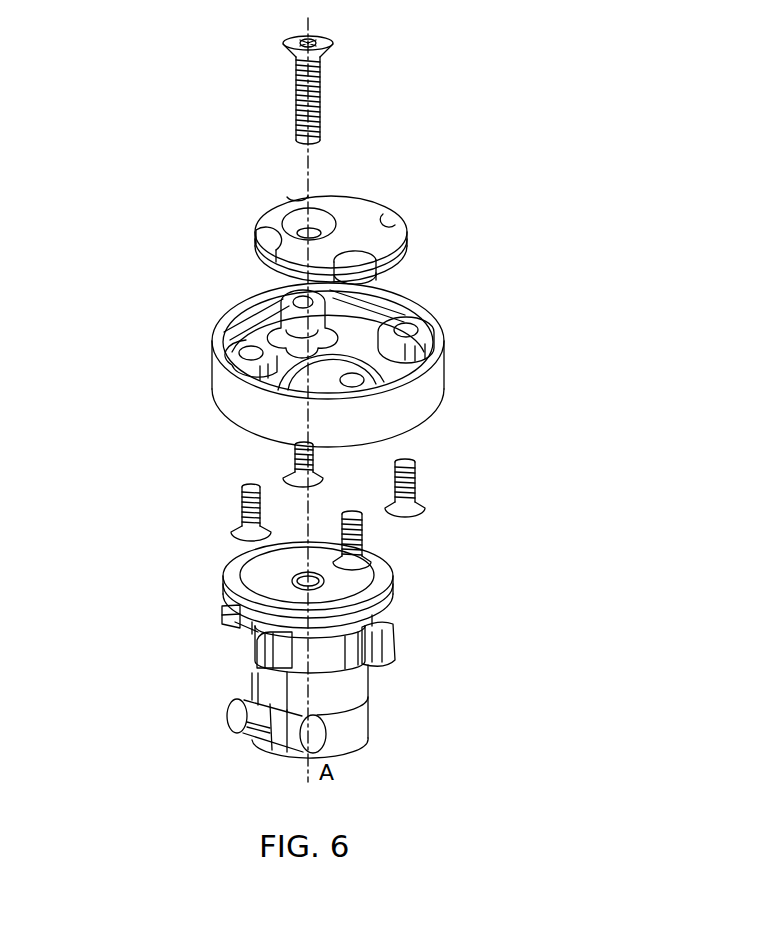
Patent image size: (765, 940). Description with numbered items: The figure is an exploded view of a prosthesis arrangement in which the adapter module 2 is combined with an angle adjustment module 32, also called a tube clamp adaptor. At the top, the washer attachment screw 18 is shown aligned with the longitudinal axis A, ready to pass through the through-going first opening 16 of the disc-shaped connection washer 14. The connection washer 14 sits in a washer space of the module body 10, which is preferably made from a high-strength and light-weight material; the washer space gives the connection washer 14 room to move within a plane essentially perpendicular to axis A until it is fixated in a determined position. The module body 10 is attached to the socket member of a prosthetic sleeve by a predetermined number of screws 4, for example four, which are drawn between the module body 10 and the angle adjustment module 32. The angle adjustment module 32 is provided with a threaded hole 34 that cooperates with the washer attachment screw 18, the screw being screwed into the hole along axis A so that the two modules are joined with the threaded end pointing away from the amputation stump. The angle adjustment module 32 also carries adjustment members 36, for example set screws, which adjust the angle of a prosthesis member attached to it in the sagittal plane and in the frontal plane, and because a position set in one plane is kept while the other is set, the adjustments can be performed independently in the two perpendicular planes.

The adapter module 2 is at (497, 271).
The screws 4 is at (295, 453).
The module body 10 is at (428, 385).
The connection washer 14 is at (339, 220).
The first opening 16 is at (308, 228).
The washer attachment screw 18 is at (322, 86).
The angle adjustment module 32 is at (313, 650).
The threaded hole 34 is at (300, 580).
The adjustment members 36 is at (233, 628).